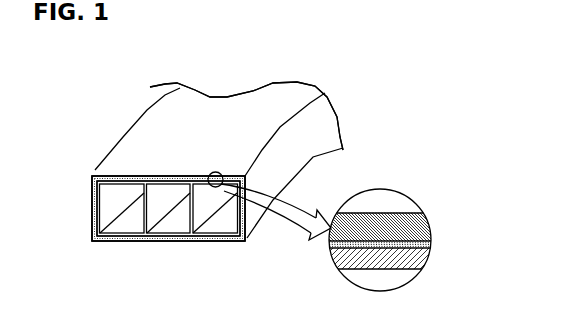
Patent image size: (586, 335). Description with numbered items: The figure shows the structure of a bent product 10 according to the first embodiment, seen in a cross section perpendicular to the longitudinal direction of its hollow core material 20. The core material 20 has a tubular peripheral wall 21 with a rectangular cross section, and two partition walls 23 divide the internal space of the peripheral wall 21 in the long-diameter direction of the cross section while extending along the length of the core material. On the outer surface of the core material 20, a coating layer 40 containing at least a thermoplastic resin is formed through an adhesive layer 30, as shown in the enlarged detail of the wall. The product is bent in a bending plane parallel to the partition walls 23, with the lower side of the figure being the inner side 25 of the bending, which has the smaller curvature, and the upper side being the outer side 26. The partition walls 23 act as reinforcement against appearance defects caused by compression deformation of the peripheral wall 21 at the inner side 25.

The bent product 10 is at (99, 87).
The hollow core material 20 is at (428, 258).
The peripheral wall 21 is at (93, 222).
The partition walls 23 is at (144, 200).
The inner side of the bending 25 is at (198, 245).
The outer side of the bending 26 is at (198, 140).
The adhesive layer 30 is at (430, 242).
The coating layer 40 is at (430, 224).